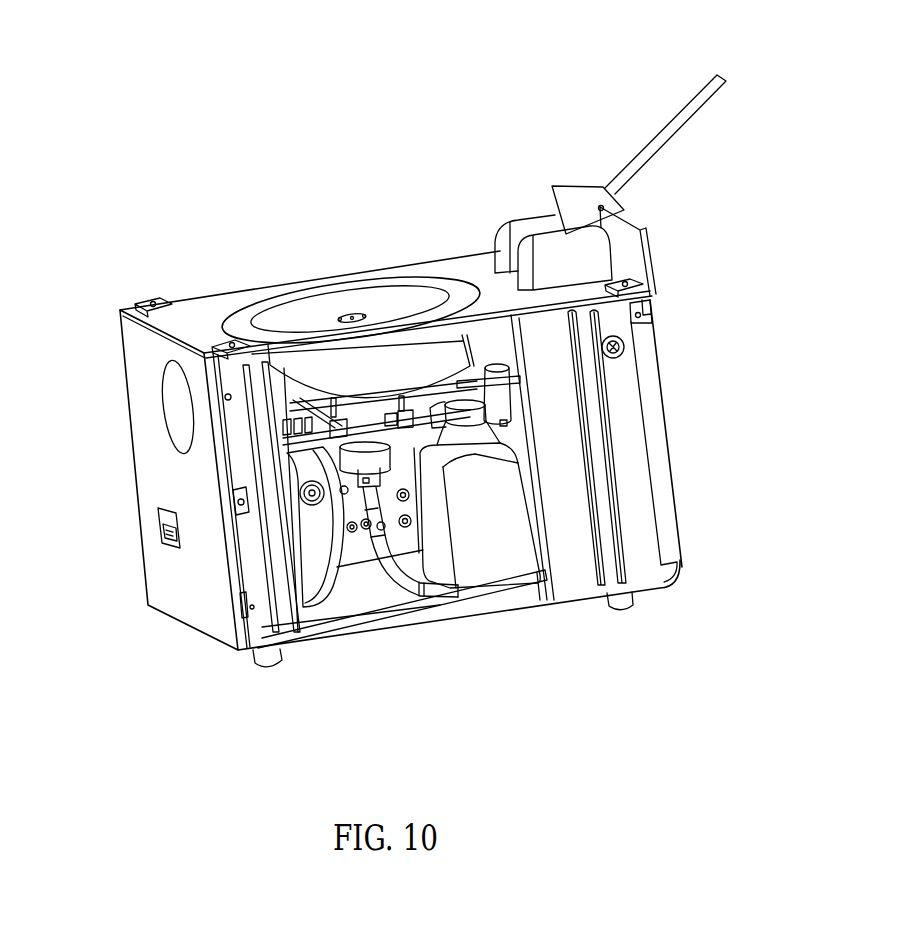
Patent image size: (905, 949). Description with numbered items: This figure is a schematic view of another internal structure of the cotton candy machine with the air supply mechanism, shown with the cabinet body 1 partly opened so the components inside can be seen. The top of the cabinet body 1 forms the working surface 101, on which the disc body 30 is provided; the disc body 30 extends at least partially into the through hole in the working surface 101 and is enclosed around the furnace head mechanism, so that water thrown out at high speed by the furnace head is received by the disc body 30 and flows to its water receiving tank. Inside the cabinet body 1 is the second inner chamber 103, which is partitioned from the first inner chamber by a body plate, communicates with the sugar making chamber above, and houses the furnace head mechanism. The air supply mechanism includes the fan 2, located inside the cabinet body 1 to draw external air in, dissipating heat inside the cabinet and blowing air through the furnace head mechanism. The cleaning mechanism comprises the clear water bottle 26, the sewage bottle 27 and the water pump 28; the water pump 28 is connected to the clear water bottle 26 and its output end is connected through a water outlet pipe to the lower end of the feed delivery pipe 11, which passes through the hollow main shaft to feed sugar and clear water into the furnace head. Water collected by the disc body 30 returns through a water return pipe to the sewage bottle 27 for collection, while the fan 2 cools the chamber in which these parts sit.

The cabinet body 1 is at (155, 460).
The fan 2 is at (313, 564).
The feed delivery pipe 11 is at (503, 585).
The clear water bottle 26 is at (511, 515).
The sewage bottle 27 is at (412, 556).
The water pump 28 is at (500, 398).
The disc body 30 is at (313, 307).
The working surface 101 is at (200, 310).
The second inner chamber 103 is at (380, 617).